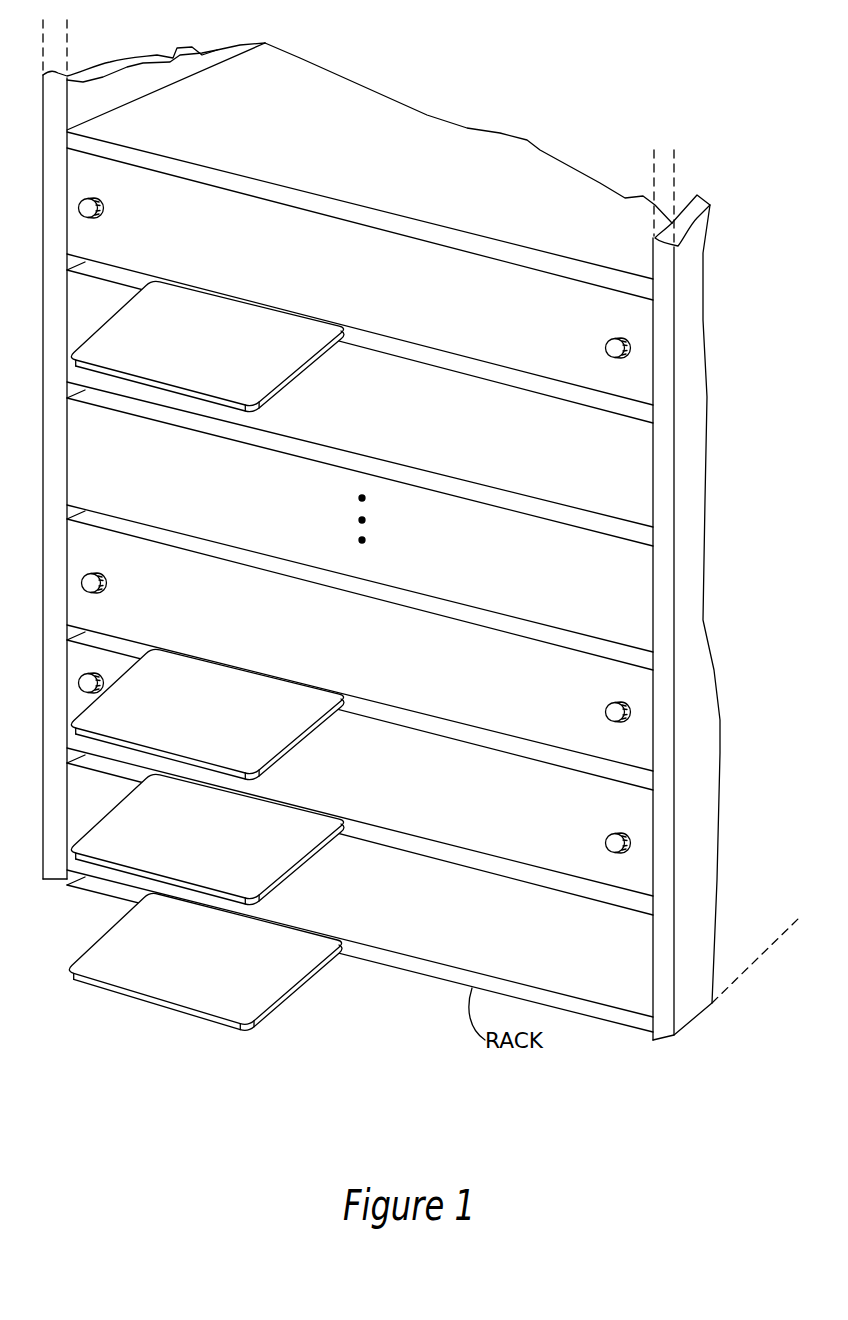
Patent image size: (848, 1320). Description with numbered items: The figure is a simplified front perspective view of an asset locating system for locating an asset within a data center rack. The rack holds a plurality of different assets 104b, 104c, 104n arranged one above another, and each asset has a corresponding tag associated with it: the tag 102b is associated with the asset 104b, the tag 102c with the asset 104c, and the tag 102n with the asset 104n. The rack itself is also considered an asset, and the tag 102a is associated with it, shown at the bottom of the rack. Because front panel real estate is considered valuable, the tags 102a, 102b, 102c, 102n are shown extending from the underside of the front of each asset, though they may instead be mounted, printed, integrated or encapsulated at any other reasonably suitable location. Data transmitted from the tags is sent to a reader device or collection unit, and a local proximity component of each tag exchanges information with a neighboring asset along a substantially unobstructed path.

The tag 102n is at (275, 338).
The tag 102c is at (274, 715).
The tag 102b is at (272, 840).
The tag 102a is at (267, 968).
The asset 104n is at (532, 330).
The asset 104c is at (532, 707).
The asset 104b is at (532, 828).